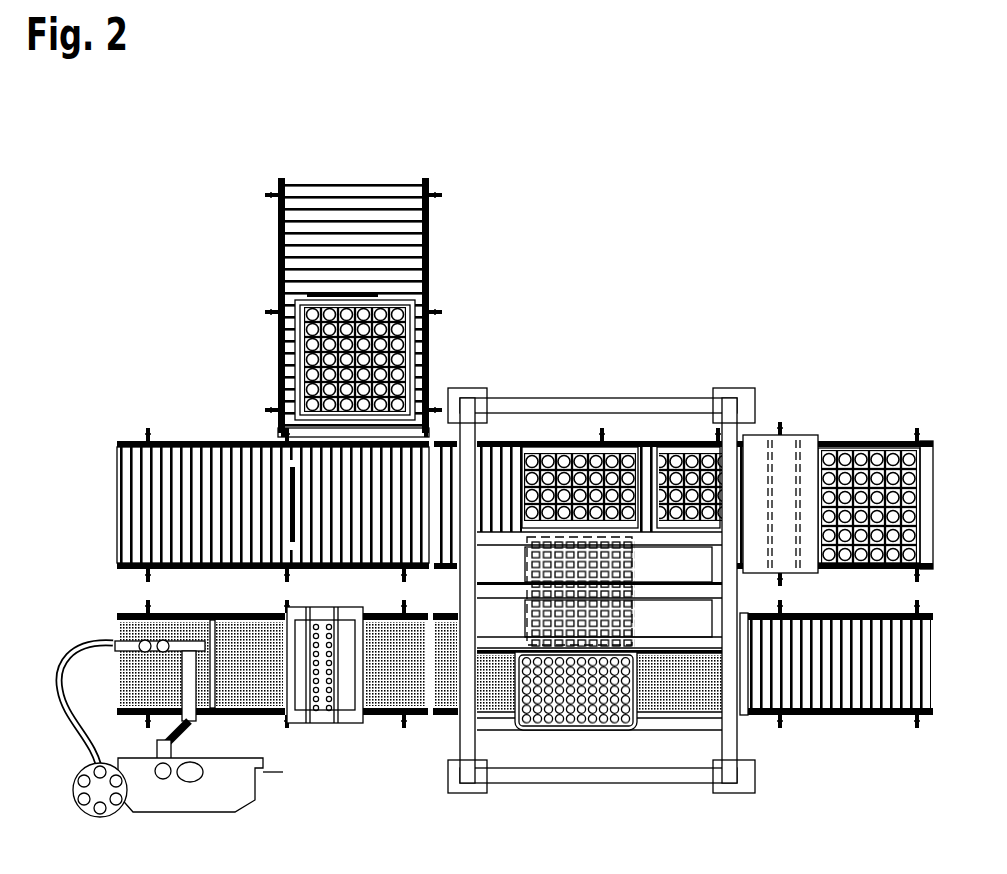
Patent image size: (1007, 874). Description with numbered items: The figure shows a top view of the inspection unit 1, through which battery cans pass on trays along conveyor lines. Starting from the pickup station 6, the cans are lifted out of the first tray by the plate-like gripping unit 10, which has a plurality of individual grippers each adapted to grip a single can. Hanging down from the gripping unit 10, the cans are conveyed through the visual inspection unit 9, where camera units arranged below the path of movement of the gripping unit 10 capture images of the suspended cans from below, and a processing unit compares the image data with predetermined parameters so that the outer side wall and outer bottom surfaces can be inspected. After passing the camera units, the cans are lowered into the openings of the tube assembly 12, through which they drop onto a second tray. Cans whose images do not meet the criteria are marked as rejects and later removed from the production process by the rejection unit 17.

The inspection unit 1 is at (758, 260).
The pickup station 6 is at (617, 444).
The visual inspection unit 9 is at (513, 570).
The gripping unit 10 is at (559, 741).
The tube assembly 12 is at (587, 703).
The rejection unit 17 is at (113, 644).